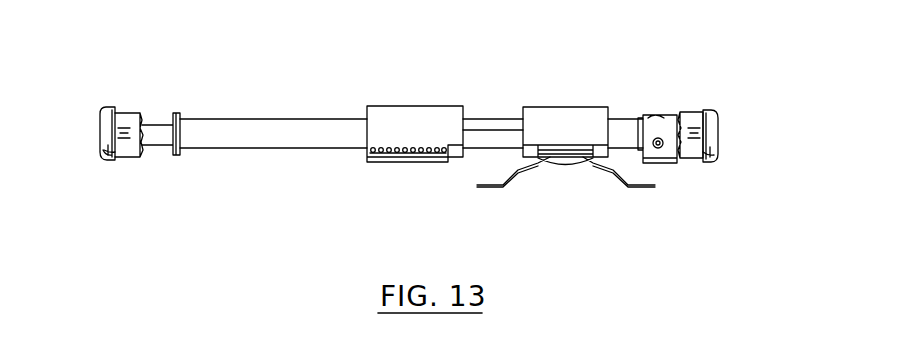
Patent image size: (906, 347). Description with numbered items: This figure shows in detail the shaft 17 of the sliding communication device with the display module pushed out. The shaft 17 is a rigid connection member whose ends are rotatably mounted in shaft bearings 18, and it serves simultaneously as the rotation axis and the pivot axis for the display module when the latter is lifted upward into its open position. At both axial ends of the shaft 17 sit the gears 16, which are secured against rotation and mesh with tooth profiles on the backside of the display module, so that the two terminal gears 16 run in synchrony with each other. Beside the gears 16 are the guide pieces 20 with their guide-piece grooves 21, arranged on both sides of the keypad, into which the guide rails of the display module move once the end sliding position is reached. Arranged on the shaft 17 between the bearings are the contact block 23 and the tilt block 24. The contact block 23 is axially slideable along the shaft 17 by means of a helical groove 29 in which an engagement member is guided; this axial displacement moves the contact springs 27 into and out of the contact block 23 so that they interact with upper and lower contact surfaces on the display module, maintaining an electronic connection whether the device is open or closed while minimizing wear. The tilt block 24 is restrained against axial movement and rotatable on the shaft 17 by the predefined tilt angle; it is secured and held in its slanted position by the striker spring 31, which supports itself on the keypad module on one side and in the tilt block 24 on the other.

The gear 16 is at (143, 113).
The shaft 17 is at (353, 137).
The shaft bearing 18 is at (647, 115).
The guide piece 20 is at (115, 107).
The guide-piece groove 21 is at (112, 160).
The contact block 23 is at (415, 123).
The tilt block 24 is at (552, 123).
The contact spring 27 is at (415, 152).
The helical groove 29 is at (477, 147).
The striker spring 31 is at (538, 167).